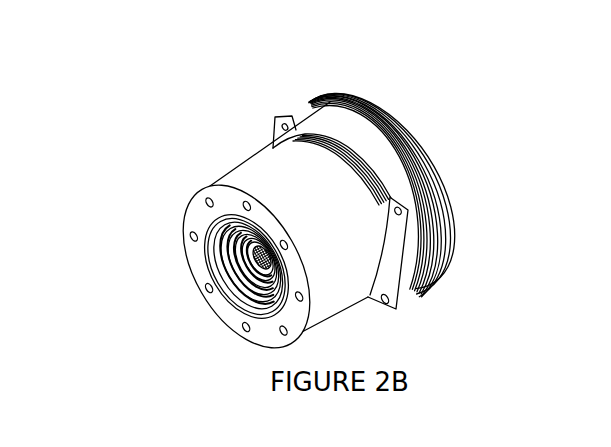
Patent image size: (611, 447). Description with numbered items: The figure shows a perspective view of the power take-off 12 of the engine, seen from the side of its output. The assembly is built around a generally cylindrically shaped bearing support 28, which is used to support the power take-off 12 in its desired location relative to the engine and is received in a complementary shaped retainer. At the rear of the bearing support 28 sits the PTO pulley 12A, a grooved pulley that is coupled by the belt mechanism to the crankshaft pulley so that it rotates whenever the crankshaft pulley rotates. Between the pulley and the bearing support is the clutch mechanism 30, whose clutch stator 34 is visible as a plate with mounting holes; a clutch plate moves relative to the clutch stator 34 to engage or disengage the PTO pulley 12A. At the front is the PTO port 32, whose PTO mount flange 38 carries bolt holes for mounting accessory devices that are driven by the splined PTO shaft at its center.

The power take-off 12 is at (172, 164).
The PTO pulley 12A is at (398, 168).
The bearing support 28 is at (263, 168).
The clutch mechanism 30 is at (308, 177).
The clutch stator 34 is at (289, 118).
The PTO port 32 is at (191, 266).
The PTO mount flange 38 is at (202, 263).